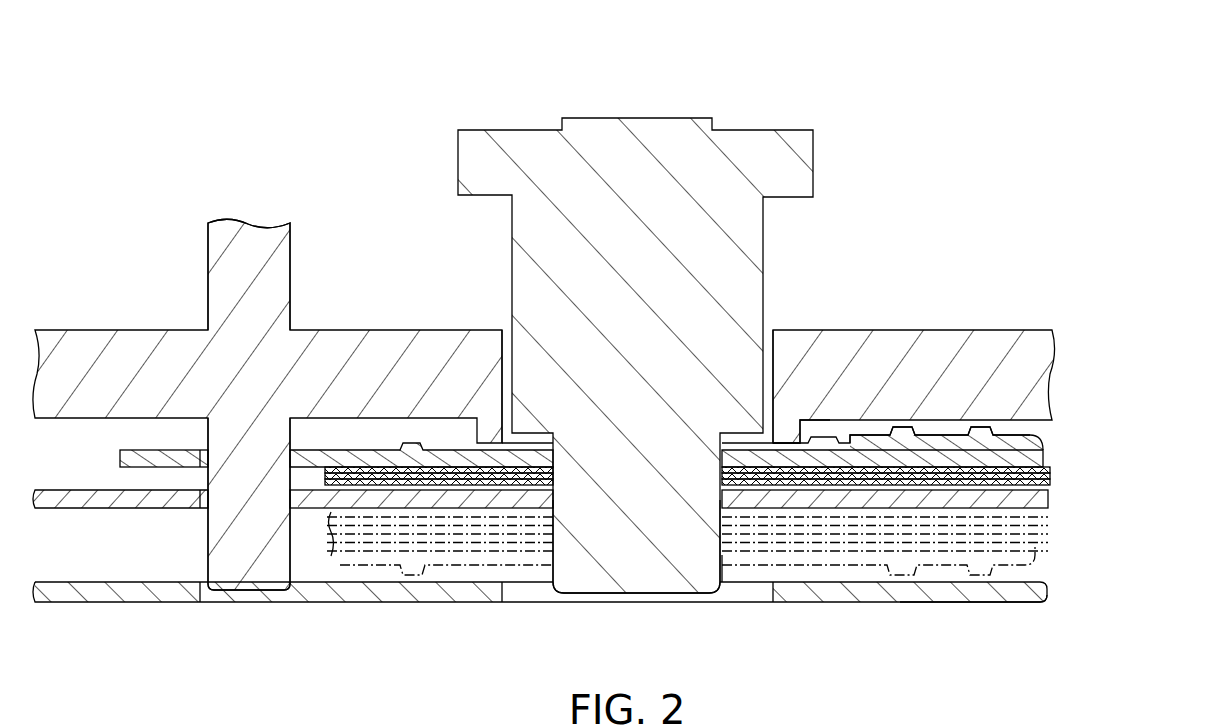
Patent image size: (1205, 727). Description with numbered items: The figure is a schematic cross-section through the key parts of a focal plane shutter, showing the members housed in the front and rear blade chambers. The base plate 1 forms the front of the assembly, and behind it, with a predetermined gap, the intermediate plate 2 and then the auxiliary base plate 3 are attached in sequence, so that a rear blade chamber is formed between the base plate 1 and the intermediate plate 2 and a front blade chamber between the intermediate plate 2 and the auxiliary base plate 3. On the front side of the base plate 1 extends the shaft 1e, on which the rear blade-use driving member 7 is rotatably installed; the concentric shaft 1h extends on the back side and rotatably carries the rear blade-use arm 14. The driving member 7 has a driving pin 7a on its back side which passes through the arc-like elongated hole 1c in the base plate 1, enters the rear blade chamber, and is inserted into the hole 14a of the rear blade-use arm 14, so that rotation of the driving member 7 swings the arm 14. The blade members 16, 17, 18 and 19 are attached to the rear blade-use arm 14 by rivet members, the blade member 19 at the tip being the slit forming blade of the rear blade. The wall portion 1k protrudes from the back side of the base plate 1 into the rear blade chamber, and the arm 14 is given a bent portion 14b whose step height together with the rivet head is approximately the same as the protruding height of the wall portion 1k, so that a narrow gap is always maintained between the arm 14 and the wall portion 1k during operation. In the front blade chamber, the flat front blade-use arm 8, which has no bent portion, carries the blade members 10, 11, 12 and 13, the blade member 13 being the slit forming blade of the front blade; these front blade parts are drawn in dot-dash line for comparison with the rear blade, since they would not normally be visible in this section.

The base plate 1 is at (960, 347).
The shaft 1e is at (243, 253).
The shaft 1h is at (257, 568).
The elongated hole 1c is at (773, 330).
The wall portion 1k is at (812, 420).
The rear blade-use driving member 7 is at (622, 157).
The driving pin 7a is at (643, 545).
The rear blade-use arm 14 is at (1043, 434).
The hole 14a is at (728, 567).
The bent portion 14b is at (868, 440).
The blade member 19 is at (1050, 453).
The blade member 18 is at (1050, 463).
The blade member 17 is at (1050, 473).
The blade member 16 is at (1050, 482).
The intermediate plate 2 is at (1048, 497).
The blade member 10 is at (1048, 518).
The blade member 11 is at (1048, 527).
The blade member 12 is at (1048, 536).
The blade member 13 is at (1048, 545).
The auxiliary base plate 3 is at (921, 605).
The front blade-use arm 8 is at (1003, 606).